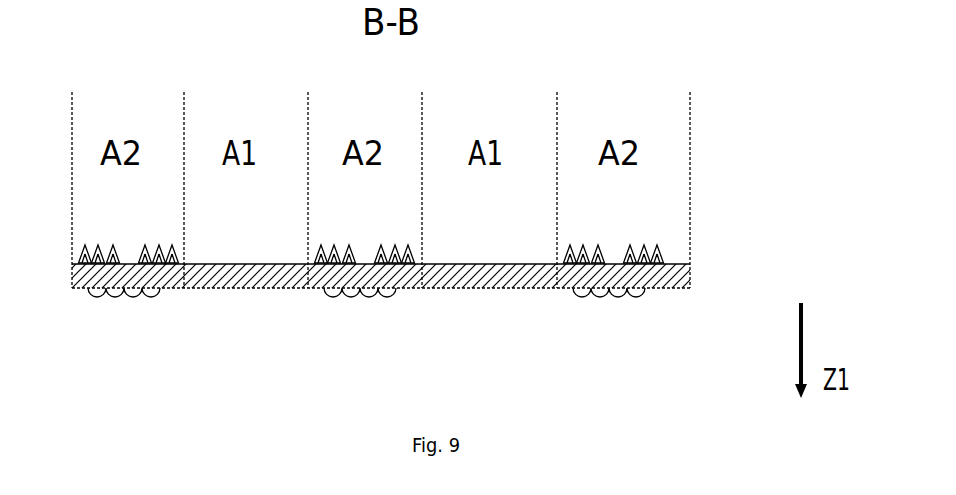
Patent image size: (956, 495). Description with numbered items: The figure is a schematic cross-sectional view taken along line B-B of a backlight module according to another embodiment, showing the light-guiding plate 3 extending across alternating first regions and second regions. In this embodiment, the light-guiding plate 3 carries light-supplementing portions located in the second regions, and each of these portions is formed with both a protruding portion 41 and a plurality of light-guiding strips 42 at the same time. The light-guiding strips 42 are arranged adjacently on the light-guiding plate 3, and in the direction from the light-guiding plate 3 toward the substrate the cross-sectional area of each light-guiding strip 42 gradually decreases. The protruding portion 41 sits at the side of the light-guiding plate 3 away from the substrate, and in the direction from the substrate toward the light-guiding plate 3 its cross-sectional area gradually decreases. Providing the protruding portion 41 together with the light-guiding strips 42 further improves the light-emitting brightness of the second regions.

The light-guiding strips 42 is at (652, 246).
The light-guiding plate 3 is at (636, 266).
The protruding portion 41 is at (628, 291).